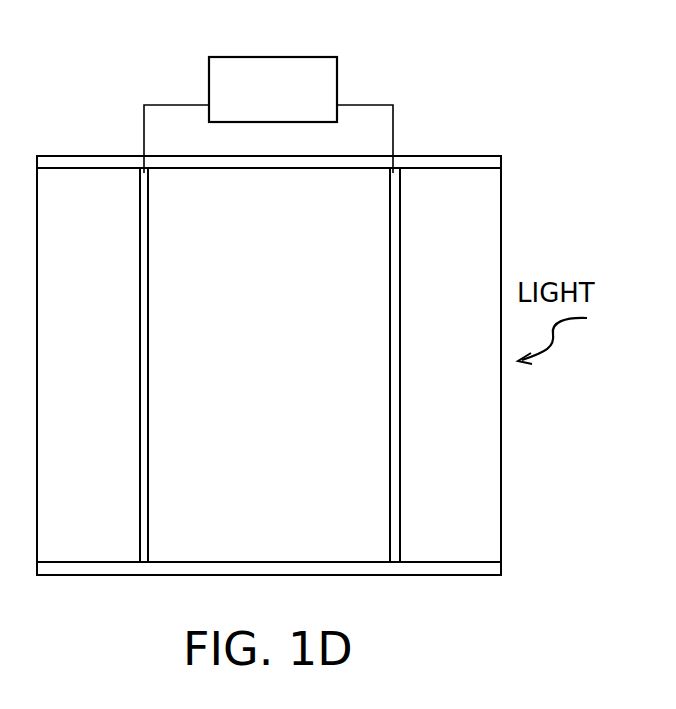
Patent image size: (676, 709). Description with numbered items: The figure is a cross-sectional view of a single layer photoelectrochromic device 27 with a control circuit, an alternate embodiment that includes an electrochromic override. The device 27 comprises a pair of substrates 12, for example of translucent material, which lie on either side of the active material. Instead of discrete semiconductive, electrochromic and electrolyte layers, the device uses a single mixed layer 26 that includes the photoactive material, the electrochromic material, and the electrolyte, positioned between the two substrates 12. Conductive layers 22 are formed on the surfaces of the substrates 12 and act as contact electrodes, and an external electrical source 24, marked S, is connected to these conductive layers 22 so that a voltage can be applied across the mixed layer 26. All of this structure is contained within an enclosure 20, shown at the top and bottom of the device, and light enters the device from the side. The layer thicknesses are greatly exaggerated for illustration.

The substrates 12 is at (102, 266).
The enclosure 20 is at (433, 156).
The conductive layers 22 is at (149, 551).
The external electrical source 24 is at (325, 88).
The single mixed layer 26 is at (287, 266).
The photoelectrochromic device 27 is at (518, 207).